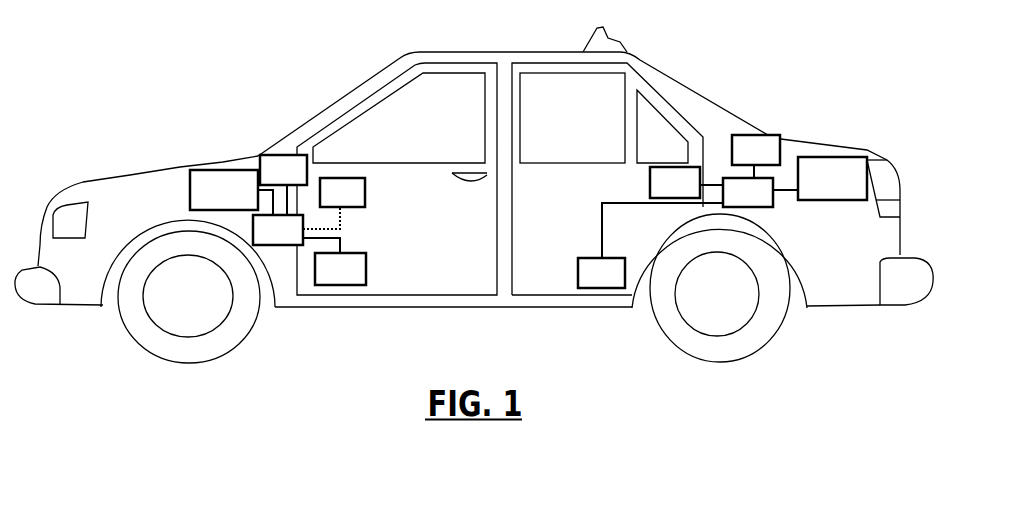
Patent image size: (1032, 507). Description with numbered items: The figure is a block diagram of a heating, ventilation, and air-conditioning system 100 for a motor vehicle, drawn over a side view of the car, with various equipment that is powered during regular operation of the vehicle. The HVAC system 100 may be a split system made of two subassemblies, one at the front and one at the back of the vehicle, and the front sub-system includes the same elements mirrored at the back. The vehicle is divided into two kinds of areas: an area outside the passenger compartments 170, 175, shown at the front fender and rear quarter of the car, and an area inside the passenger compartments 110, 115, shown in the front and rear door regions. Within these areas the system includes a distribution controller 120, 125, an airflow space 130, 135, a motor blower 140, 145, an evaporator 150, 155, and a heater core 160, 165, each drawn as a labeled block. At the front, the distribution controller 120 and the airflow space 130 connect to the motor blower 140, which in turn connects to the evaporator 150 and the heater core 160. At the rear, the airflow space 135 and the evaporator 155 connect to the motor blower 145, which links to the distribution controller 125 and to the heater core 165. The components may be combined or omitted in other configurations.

The heating, ventilation, and air-conditioning (HVAC) system 100 is at (205, 92).
The area inside passenger compartment 110 is at (422, 132).
The area inside passenger compartment 115 is at (566, 130).
The distribution controller 120 is at (208, 200).
The distribution controller 125 is at (816, 188).
The airflow space 130 is at (268, 180).
The airflow space 135 is at (740, 160).
The motor blower 140 is at (262, 240).
The motor blower 145 is at (732, 202).
The evaporator 150 is at (326, 202).
The evaporator 155 is at (659, 192).
The heater core 160 is at (324, 278).
The heater core 165 is at (585, 282).
The area outside passenger compartment 170 is at (120, 206).
The area outside passenger compartment 175 is at (835, 266).